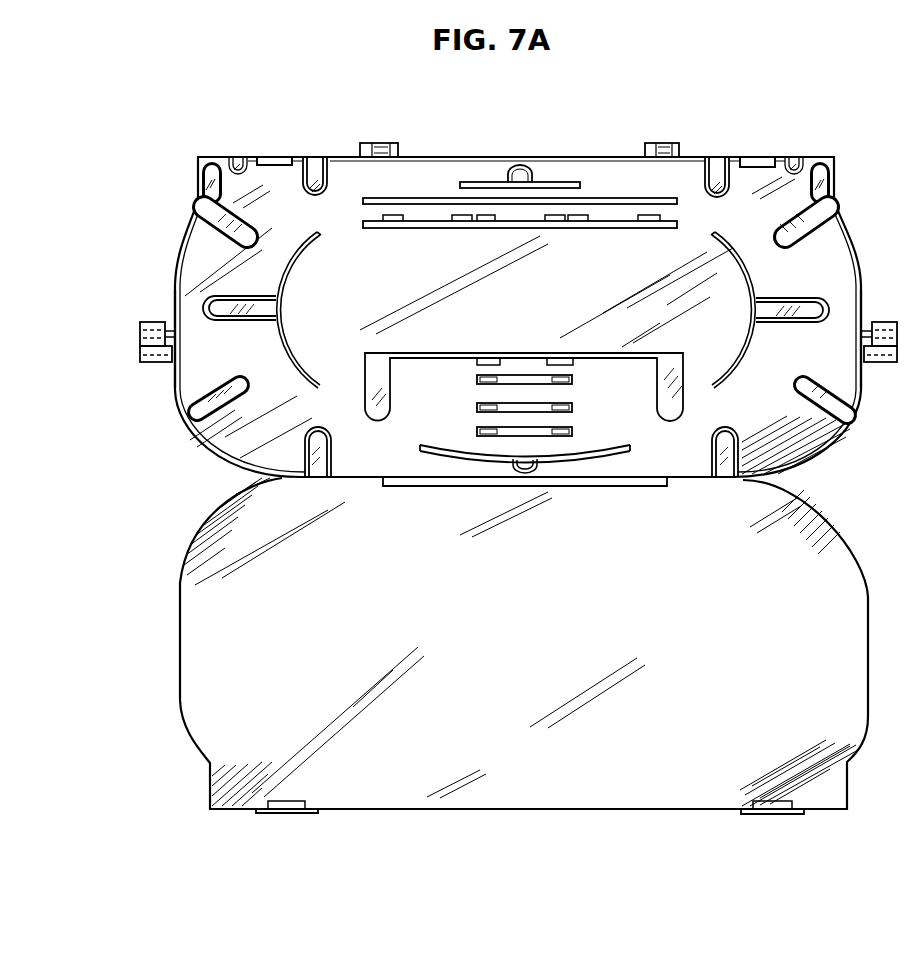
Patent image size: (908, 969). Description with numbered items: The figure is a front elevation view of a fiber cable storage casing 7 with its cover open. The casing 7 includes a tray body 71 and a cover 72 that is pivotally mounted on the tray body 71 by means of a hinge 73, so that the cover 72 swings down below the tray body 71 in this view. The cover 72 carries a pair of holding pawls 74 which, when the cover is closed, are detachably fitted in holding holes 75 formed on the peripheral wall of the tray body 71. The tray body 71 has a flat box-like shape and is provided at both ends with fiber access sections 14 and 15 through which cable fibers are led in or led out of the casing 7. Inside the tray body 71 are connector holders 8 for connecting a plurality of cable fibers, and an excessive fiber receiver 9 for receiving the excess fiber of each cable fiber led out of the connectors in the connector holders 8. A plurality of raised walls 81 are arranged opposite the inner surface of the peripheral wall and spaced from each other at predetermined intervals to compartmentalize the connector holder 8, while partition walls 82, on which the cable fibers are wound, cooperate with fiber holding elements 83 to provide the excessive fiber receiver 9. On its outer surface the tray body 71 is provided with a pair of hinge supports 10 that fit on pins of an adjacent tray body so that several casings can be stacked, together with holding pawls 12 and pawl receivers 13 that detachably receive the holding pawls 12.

The fiber cable storage casing 7 is at (733, 155).
The tray body 71 is at (878, 246).
The cover 72 is at (479, 800).
The hinge 73 is at (608, 488).
The holding pawl 74 is at (290, 800).
The holding hole 75 is at (791, 148).
The connector holder 8 is at (487, 185).
The raised wall 81 is at (542, 404).
The partition wall 82 is at (283, 334).
The fiber holding element 83 is at (797, 396).
The excessive fiber receiver 9 is at (241, 437).
The hinge support 10 is at (362, 149).
The holding pawl 12 is at (156, 364).
The pawl receiver 13 is at (151, 321).
The fiber access section 14 is at (845, 194).
The fiber access section 15 is at (192, 171).